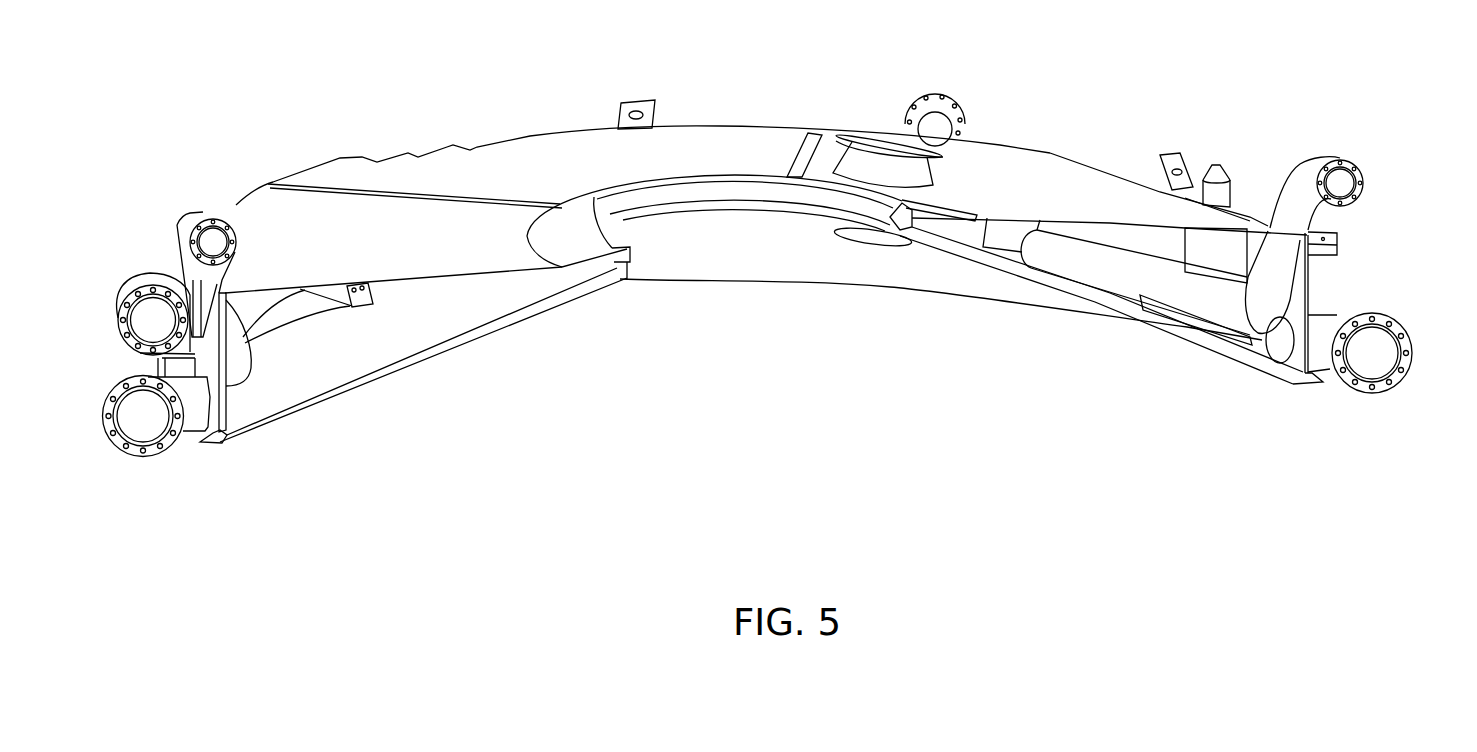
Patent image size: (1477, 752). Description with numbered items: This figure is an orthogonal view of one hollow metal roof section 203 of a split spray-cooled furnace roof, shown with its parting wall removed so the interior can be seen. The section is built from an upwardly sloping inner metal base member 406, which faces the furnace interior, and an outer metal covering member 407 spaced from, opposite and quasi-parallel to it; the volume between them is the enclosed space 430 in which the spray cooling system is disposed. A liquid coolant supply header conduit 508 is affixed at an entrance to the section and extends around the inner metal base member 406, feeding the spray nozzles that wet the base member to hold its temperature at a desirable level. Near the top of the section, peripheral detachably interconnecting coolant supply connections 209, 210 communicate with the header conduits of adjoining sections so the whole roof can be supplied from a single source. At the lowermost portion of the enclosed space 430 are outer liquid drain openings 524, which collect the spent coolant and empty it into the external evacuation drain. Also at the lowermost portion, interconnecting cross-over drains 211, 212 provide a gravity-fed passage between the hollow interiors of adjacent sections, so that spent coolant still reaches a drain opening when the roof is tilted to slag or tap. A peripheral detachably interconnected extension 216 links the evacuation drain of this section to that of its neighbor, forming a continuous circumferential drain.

The hollow metal roof section 203 is at (350, 175).
The coolant supply connection 209 is at (193, 224).
The interconnected extension 216 is at (137, 287).
The interconnecting cross-over drain 211 is at (190, 423).
The enclosed space 430 is at (377, 347).
The inner metal base member 406 is at (472, 337).
The outer metal covering member 407 is at (1070, 183).
The coolant supply connection 210 is at (1318, 160).
The interconnecting cross-over drain 212 is at (1335, 323).
The outer liquid drain opening 524 is at (1183, 312).
The liquid coolant supply header conduit 508 is at (1220, 300).